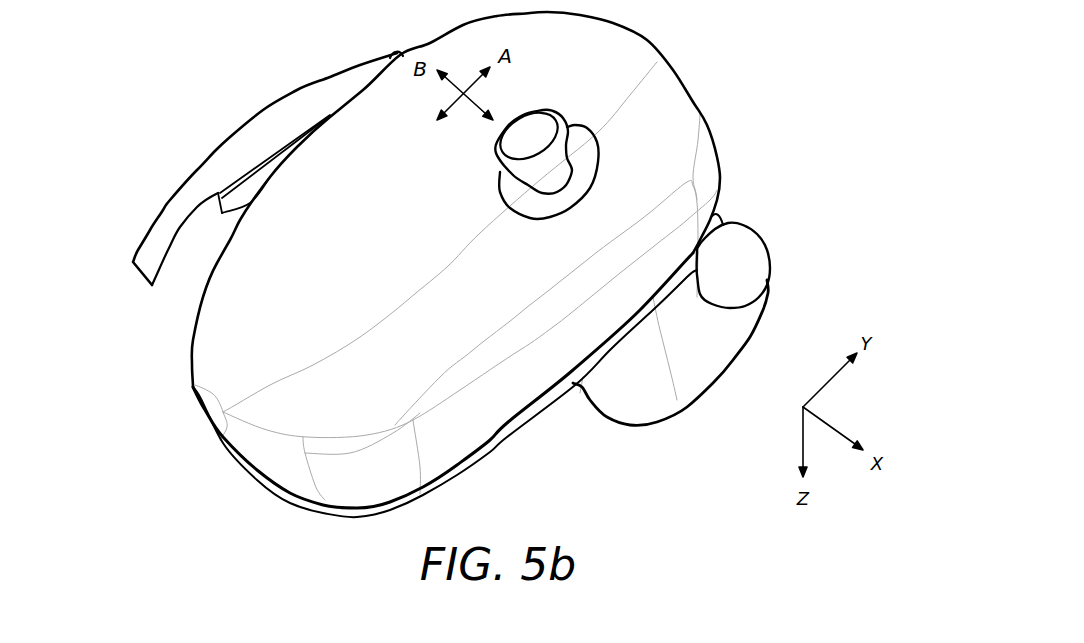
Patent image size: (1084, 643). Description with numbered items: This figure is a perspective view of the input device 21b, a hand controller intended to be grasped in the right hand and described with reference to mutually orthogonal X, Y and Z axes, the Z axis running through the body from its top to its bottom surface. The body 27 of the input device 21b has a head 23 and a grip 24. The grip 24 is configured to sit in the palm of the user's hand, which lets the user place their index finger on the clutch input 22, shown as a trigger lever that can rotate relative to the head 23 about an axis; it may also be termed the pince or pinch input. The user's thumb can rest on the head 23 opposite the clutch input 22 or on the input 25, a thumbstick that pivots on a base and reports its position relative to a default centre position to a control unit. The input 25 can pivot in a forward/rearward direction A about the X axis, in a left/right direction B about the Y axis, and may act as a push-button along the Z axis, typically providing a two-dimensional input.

The input device 21b is at (190, 333).
The clutch input 22 is at (165, 220).
The head 23 is at (460, 347).
The grip 24 is at (720, 345).
The input 25 is at (545, 112).
The body 27 is at (410, 197).